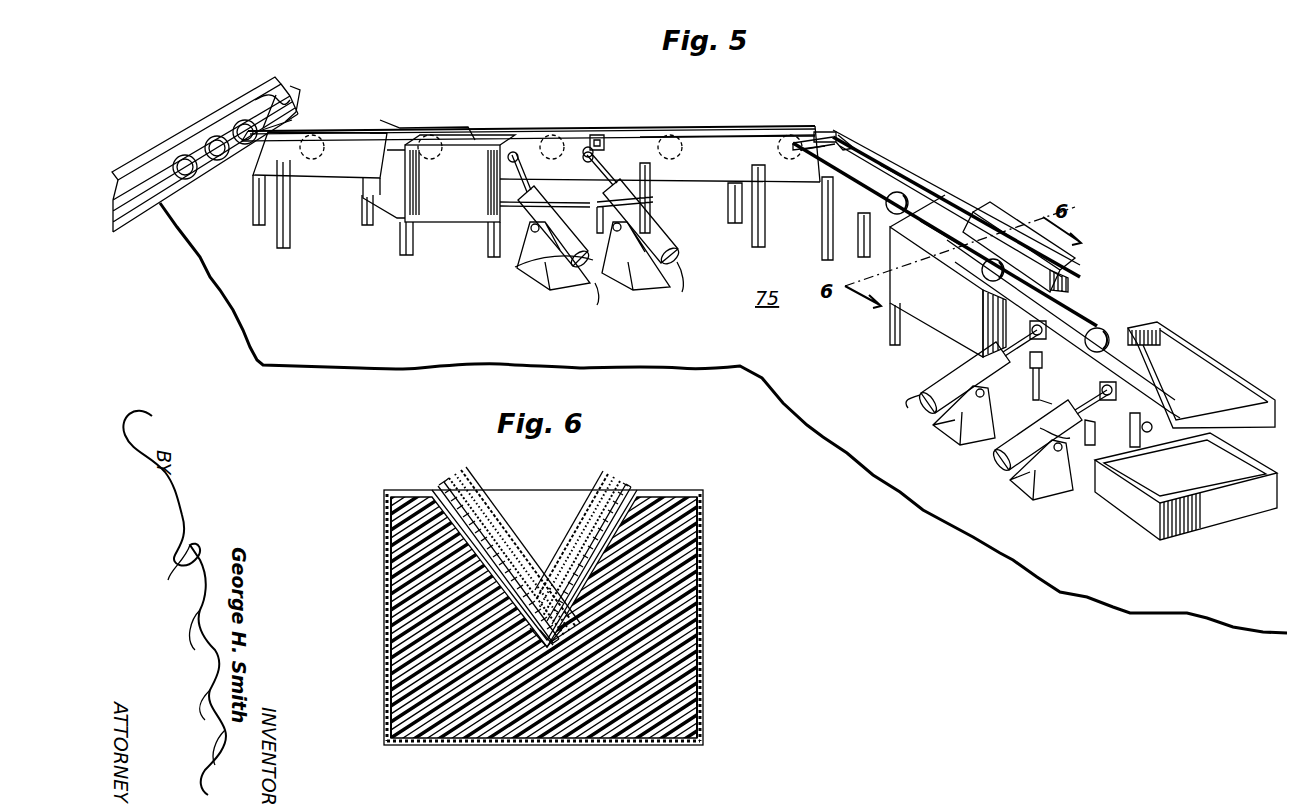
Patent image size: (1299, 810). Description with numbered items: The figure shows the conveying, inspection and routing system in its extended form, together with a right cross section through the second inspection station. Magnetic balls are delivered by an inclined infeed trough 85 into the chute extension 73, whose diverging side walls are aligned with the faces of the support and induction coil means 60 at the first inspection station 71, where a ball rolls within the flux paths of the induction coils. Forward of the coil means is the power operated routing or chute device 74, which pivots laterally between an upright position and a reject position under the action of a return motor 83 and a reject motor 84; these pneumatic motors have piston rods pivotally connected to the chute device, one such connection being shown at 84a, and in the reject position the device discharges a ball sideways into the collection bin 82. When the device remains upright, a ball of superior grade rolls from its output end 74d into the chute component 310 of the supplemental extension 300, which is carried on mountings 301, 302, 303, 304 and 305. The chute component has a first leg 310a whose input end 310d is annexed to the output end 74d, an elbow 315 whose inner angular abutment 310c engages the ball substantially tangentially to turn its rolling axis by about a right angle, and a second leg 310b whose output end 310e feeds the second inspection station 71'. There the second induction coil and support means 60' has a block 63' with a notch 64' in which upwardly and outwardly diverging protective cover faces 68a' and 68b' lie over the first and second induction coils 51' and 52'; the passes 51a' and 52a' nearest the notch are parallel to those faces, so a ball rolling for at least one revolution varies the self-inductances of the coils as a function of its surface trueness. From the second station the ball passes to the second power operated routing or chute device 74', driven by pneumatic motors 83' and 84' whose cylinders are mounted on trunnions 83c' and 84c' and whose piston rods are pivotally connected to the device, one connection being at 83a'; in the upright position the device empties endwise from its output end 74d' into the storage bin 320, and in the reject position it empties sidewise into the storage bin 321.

In FIG. 5, the infeed conveyor trough 85 is at (172, 140).
In FIG. 5, the chute extension 73 is at (338, 135).
In FIG. 5, the inspection station 71 is at (422, 107).
In FIG. 5, the power operated routing or chute device 74 is at (531, 129).
In FIG. 5, the output end 74d is at (603, 119).
In FIG. 5, the chute component 310 is at (683, 127).
In FIG. 5, the leg 310a is at (755, 128).
In FIG. 5, the leg 310b is at (913, 192).
In FIG. 5, the inner angular abutment 310c is at (855, 138).
In FIG. 5, the input end 310d is at (600, 132).
In FIG. 5, the output end 310e is at (943, 240).
In FIG. 5, the elbow 315 is at (835, 138).
In FIG. 5, the supplemental extension 300 is at (874, 140).
In FIG. 5, the support and induction coil means 60 is at (457, 199).
In FIG. 5, the collection bin 82 is at (515, 220).
In FIG. 5, the return motor 83 is at (555, 233).
In FIG. 5, the reject motor 84 is at (648, 233).
In FIG. 5, the mounting 301 is at (753, 217).
In FIG. 5, the mounting 302 is at (857, 230).
In FIG. 5, the mounting 303 is at (895, 320).
In FIG. 5, the second inspection station 71' is at (1019, 241).
In FIG. 5, the protective cover face 68a' is at (972, 311).
In FIG. 6, the protective cover face 68a' is at (595, 541).
In FIG. 5, the protective cover face 68b' is at (1078, 269).
In FIG. 6, the protective cover face 68b' is at (498, 550).
In FIG. 5, the pneumatic motor 83' is at (972, 380).
In FIG. 5, the pivotal connection 83a' is at (1075, 308).
In FIG. 5, the trunnion 83c' is at (1025, 405).
In FIG. 5, the pneumatic motor 84' is at (1031, 445).
In FIG. 5, the pivotal connection 84a is at (1107, 383).
In FIG. 5, the trunnion 84c' is at (1097, 437).
In FIG. 5, the second power operated routing or chute device 74' is at (1061, 326).
In FIG. 5, the rail bracket 74d' is at (1224, 378).
In FIG. 5, the mounting 304 is at (1032, 360).
In FIG. 5, the mounting 305 is at (1150, 440).
In FIG. 5, the magnetic ball storage bin 321 is at (1180, 337).
In FIG. 5, the magnetic ball storage bin 320 is at (1225, 512).
In FIG. 5, the second induction coil and support means 60' is at (936, 283).
In FIG. 6, the second induction coil and support means 60' is at (550, 547).
In FIG. 6, the block 63' is at (730, 617).
In FIG. 6, the notch 64' is at (365, 617).
In FIG. 6, the second induction coil 52' is at (509, 554).
In FIG. 6, the passes 52a' is at (520, 547).
In FIG. 6, the first induction coil 51' is at (579, 546).
In FIG. 6, the passes 51a' is at (571, 534).